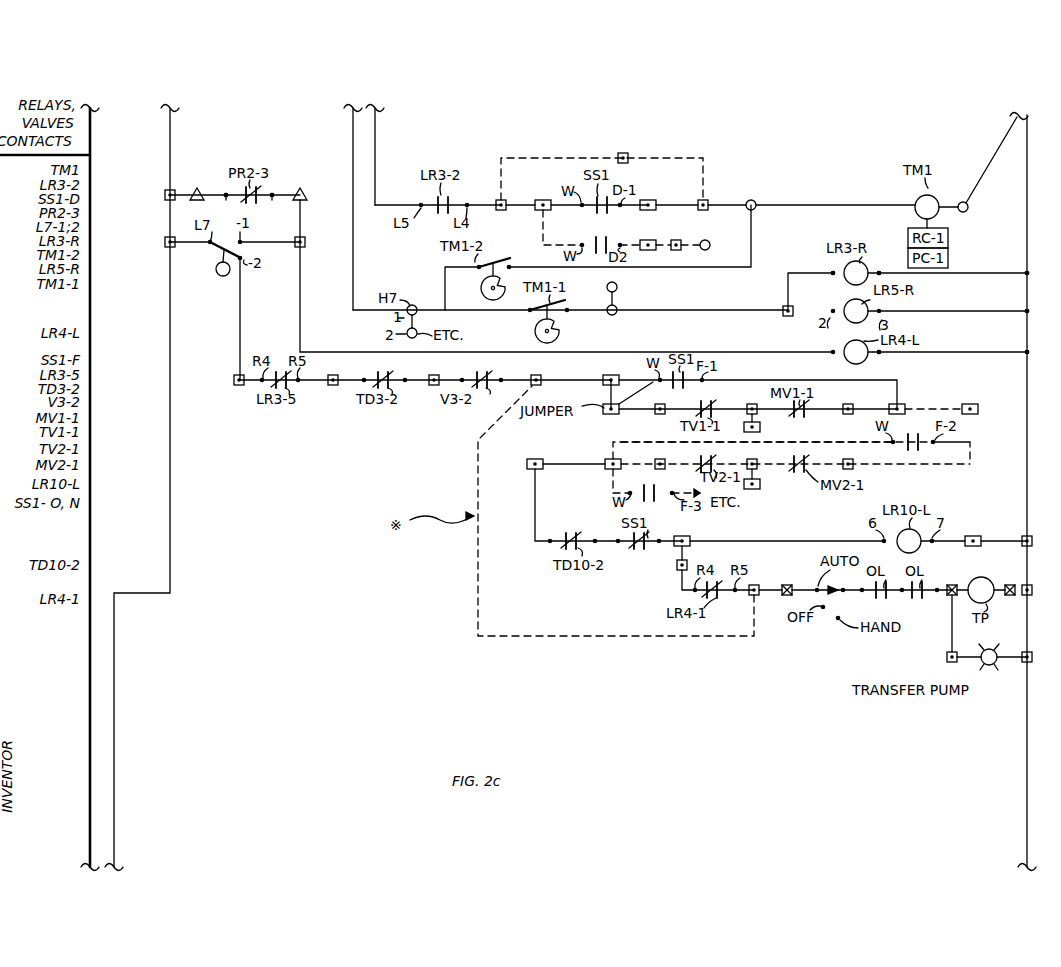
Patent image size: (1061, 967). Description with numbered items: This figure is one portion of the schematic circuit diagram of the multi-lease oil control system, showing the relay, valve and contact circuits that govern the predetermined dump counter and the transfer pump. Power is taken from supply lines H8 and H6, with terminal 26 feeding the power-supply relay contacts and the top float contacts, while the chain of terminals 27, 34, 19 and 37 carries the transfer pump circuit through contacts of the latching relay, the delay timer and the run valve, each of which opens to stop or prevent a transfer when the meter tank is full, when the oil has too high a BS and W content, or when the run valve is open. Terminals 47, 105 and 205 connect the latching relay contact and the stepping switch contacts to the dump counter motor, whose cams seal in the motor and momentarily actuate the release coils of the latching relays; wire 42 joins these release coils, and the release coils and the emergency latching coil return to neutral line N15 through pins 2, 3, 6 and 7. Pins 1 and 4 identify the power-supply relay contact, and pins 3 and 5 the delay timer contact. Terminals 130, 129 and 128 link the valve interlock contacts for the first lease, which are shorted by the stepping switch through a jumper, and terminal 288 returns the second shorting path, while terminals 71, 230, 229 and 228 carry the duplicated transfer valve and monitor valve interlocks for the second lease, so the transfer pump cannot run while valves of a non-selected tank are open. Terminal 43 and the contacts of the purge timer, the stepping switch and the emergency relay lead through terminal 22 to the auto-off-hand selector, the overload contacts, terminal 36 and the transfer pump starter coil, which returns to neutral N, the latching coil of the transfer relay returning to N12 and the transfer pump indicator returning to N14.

The terminal H8 is at (168, 190).
The terminal H6 is at (164, 242).
The wire terminal 26 is at (302, 190).
The wire terminal 27 is at (236, 376).
The weir 34 is at (337, 376).
The wire terminal 19 is at (432, 376).
The wire terminal 37 is at (536, 378).
The wire terminal 47 is at (502, 198).
The wire terminal 105 is at (654, 200).
The wire terminal 205 is at (716, 258).
The wire terminal 42 is at (607, 286).
The wire terminal 130 is at (660, 414).
The wire terminal 129 is at (752, 406).
The wire terminal 128 is at (851, 406).
The wire terminal 288 is at (966, 406).
The wire terminal 71 is at (534, 458).
The wire terminal 230 is at (660, 460).
The wire terminal 229 is at (752, 462).
The wire terminal 228 is at (850, 462).
The wire terminal 43 is at (688, 538).
The wire terminal 22 is at (756, 586).
The wire terminal 36 is at (950, 586).
The neutral terminal N is at (1009, 584).
The neutral terminal N12 is at (976, 530).
The neutral terminal N14 is at (1041, 658).
The neutral terminal N15 is at (1043, 313).
The contact pin 1 is at (225, 200).
The contact pin 2 is at (596, 538).
The contact pin 3 is at (366, 376).
The contact pin 4 is at (274, 198).
The contact pin 5 is at (406, 376).
The contact pin 6 is at (552, 538).
The contact pin 7 is at (879, 354).